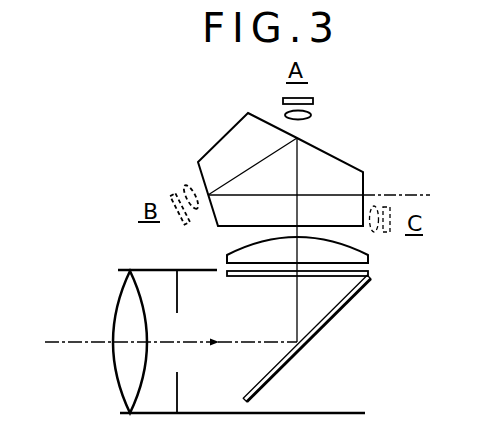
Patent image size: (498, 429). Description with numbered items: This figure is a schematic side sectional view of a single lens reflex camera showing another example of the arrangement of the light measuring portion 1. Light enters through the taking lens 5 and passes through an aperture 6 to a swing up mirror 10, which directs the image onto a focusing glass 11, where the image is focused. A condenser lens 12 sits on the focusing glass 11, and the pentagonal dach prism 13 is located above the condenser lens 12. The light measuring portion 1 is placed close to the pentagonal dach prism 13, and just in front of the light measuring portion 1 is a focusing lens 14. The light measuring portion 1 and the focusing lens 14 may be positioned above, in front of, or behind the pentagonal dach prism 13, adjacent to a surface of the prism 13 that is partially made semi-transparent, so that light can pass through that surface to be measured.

The light measuring portion 1 is at (313, 93).
The taking lens 5 is at (127, 375).
The aperture 6 is at (178, 388).
The swing up mirror 10 is at (282, 365).
The focusing glass 11 is at (333, 273).
The condenser lens 12 is at (353, 260).
The pentagonal dach prism 13 is at (338, 169).
The focusing lens 14 is at (312, 113).